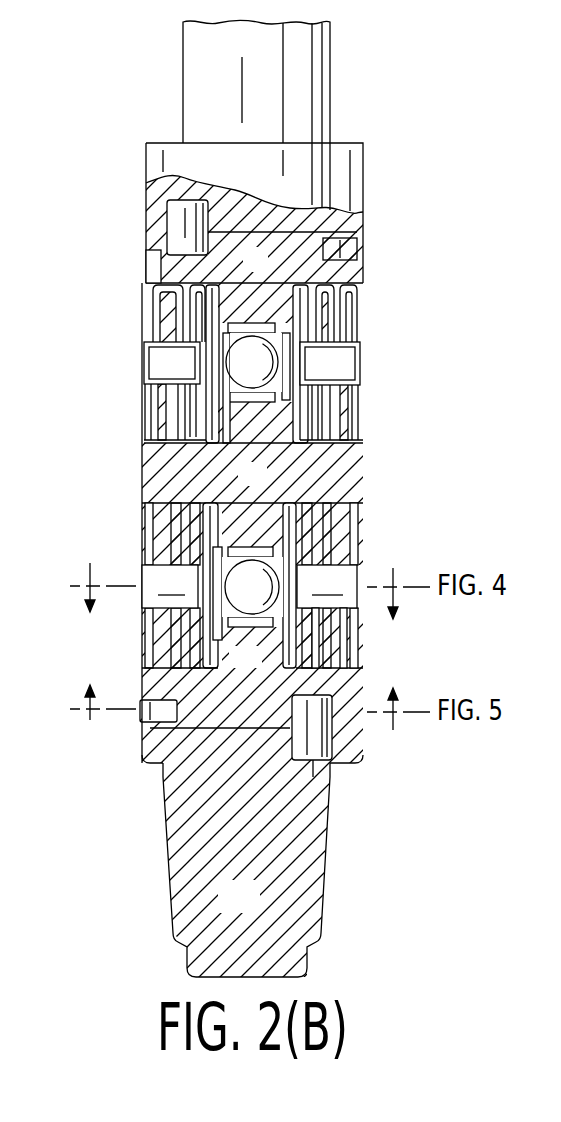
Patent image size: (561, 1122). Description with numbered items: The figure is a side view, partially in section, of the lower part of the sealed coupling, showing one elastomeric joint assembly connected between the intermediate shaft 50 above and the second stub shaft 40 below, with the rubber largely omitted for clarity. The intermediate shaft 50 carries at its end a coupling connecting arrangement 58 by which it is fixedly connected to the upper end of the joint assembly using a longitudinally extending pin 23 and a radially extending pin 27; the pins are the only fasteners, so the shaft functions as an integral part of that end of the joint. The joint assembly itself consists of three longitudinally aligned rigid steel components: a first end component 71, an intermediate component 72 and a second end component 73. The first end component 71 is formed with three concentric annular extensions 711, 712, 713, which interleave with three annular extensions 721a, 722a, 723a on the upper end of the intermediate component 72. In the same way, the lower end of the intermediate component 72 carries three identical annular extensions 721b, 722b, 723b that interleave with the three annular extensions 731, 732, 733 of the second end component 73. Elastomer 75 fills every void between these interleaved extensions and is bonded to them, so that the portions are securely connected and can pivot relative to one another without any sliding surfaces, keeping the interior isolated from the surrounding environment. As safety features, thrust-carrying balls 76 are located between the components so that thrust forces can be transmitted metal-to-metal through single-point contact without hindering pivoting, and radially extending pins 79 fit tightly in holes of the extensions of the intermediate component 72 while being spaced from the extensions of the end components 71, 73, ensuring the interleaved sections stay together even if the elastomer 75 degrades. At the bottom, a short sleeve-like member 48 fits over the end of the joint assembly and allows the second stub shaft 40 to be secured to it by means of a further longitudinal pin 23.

The intermediate shaft 50 is at (218, 76).
The longitudinally extending pin 23 is at (190, 222).
The coupling connecting arrangement 58 is at (153, 250).
The radially extending pin 27 is at (355, 247).
The first end component 71 is at (268, 278).
The annular extension 711 is at (360, 292).
The annular extension 712 is at (345, 330).
The annular extension 713 is at (360, 400).
The ball 76 is at (243, 362).
The pin 79 is at (186, 375).
The annular extension 721a is at (147, 450).
The annular extension 722a is at (143, 468).
The annular extension 723a is at (143, 487).
The intermediate component 72 is at (265, 490).
The annular extension 733 is at (365, 470).
The annular extension 732 is at (362, 517).
The annular extension 731 is at (362, 536).
The annular extension 723b is at (233, 547).
The elastomer 75 is at (142, 640).
The annular extension 721b is at (362, 640).
The annular extension 722b is at (360, 670).
The second end component 73 is at (260, 678).
The sleeve-like member 48 is at (350, 735).
The second stub shaft 40 is at (258, 910).